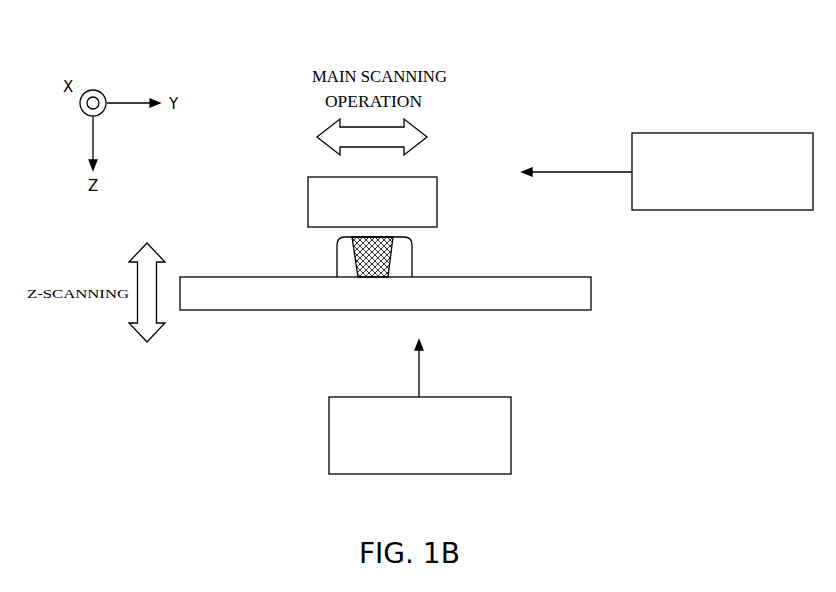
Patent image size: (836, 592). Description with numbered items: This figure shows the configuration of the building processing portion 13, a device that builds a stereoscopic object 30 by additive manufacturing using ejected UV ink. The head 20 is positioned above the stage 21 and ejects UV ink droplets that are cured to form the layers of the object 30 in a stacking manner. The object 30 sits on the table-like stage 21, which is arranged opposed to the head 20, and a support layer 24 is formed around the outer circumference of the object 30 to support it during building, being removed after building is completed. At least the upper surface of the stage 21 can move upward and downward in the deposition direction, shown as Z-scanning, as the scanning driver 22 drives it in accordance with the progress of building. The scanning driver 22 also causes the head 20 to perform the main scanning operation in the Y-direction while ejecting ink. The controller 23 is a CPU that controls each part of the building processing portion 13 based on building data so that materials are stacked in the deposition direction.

The building processing portion 13 is at (719, 38).
The head 20 is at (308, 207).
The stage 21 is at (256, 310).
The scanning driver 22 is at (757, 133).
The controller 23 is at (511, 430).
The support layer 24 is at (337, 262).
The stereoscopic object 30 is at (403, 261).